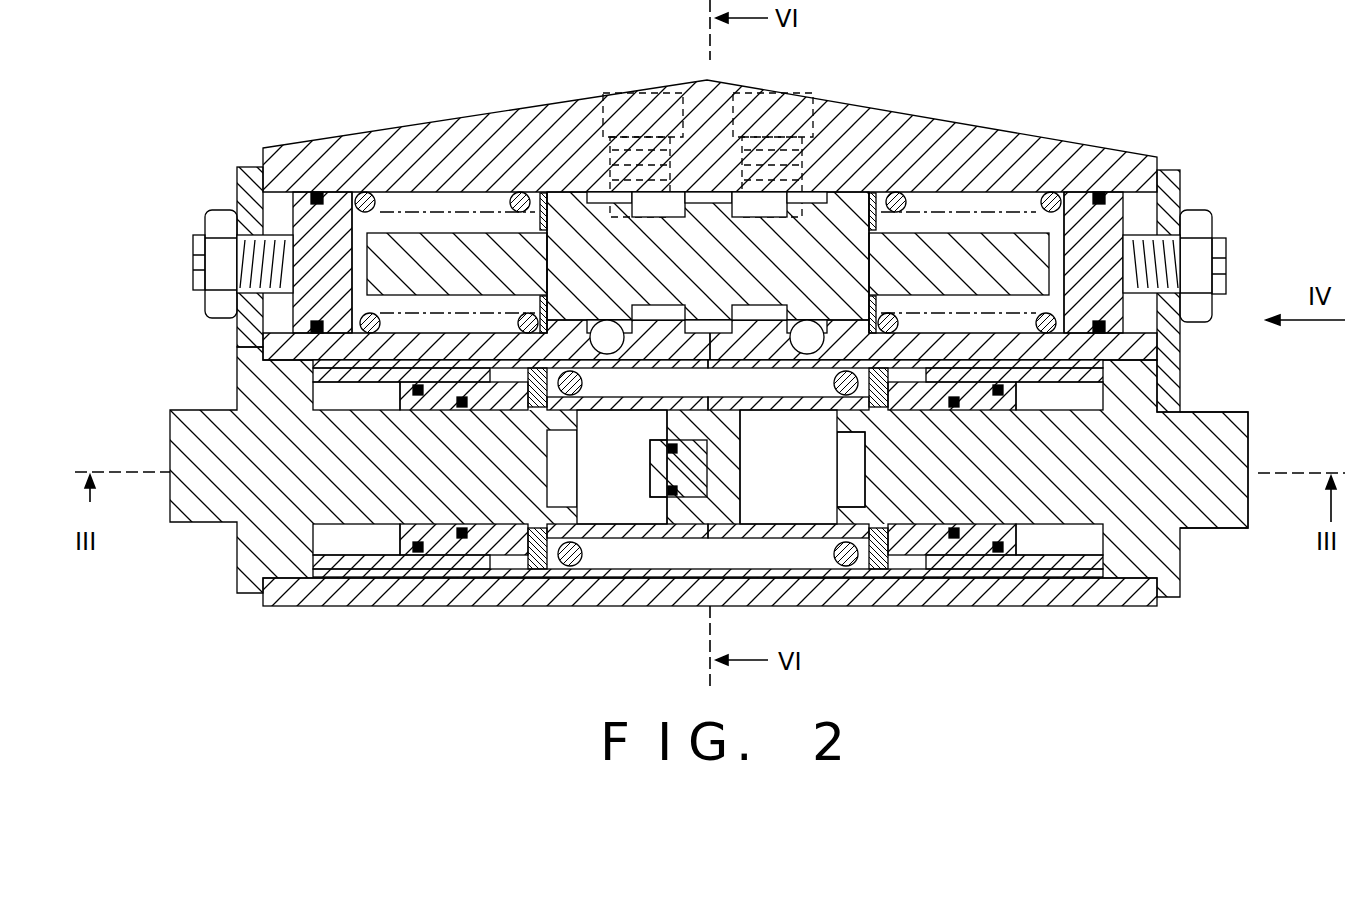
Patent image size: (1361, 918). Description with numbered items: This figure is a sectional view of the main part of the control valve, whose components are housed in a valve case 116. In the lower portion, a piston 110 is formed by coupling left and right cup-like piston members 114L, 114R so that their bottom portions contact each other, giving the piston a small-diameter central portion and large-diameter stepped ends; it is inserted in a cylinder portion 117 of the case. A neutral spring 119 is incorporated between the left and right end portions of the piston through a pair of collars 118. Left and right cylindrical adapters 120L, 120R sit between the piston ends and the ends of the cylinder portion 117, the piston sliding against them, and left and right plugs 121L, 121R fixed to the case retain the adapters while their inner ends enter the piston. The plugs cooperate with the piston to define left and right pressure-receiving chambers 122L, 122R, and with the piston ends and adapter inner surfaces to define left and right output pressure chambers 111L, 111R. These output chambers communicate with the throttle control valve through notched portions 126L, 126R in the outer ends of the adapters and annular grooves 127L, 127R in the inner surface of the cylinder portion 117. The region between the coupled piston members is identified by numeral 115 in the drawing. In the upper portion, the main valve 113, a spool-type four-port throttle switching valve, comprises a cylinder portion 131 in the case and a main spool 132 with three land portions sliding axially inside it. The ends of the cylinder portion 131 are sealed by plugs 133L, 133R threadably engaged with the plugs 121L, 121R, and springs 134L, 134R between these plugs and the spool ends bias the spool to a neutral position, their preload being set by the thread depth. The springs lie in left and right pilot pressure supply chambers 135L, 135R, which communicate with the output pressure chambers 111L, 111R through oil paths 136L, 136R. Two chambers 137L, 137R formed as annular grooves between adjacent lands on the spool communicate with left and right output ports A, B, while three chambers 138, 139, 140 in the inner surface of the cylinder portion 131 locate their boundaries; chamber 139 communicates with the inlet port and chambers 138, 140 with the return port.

The piston 110 is at (746, 507).
The left output pressure chamber 111L is at (372, 540).
The right output pressure chamber 111R is at (1100, 543).
The main valve 113 is at (1240, 232).
The left piston member 114L is at (687, 530).
The right piston member 114R is at (723, 540).
The central spacer 115 is at (655, 497).
The valve case 116 is at (1052, 192).
The cylinder portion 117 is at (1095, 580).
The collars 118 is at (535, 565).
The neutral spring 119 is at (568, 568).
The left cylindrical adapter 120L is at (305, 582).
The right cylindrical adapter 120R is at (1047, 567).
The left plug 121L is at (193, 513).
The right plug 121R is at (1223, 420).
The left pressure-receiving chamber 122L is at (638, 444).
The right pressure-receiving chamber 122R is at (807, 444).
The left notched portion 126L is at (312, 365).
The right notched portion 126R is at (1105, 368).
The left annular groove 127L is at (460, 566).
The right annular groove 127R is at (957, 587).
The cylinder portion 131 is at (853, 190).
The main spool 132 is at (557, 210).
The left plug 133L is at (300, 205).
The right plug 133R is at (1128, 205).
The left spring 134L is at (364, 192).
The right spring 134R is at (1102, 197).
The left pilot pressure supply chamber 135L is at (423, 223).
The right pilot pressure supply chamber 135R is at (983, 223).
The left oil path 136L is at (710, 346).
The right oil path 136R is at (710, 346).
The left chamber 137L is at (697, 185).
The right chamber 137R is at (790, 185).
The chamber 138 is at (597, 203).
The chamber 139 is at (712, 190).
The chamber 140 is at (823, 192).
The left output port A is at (622, 95).
The right output port B is at (815, 100).